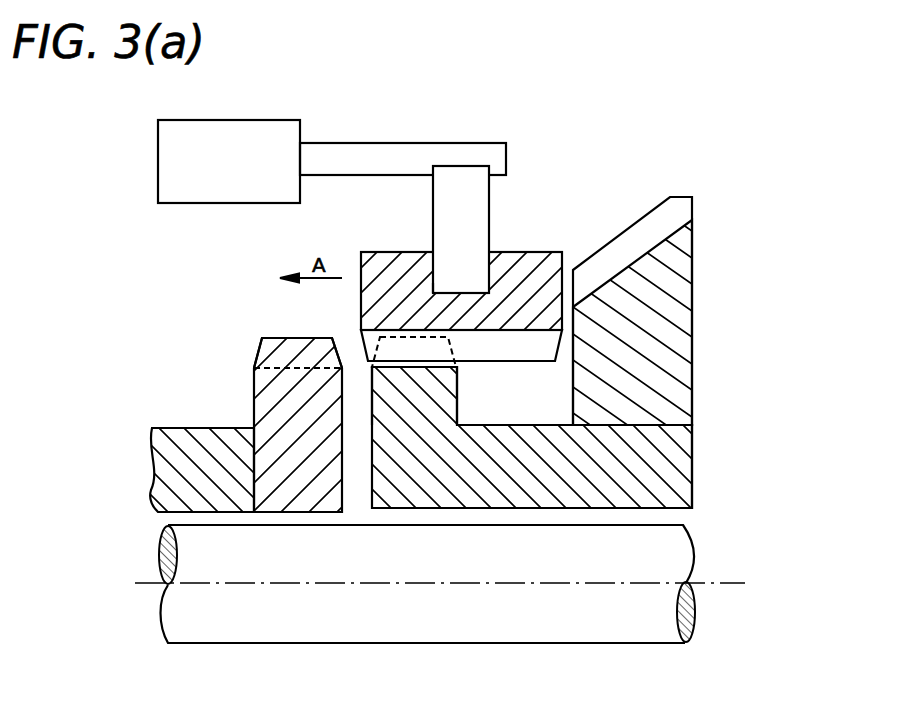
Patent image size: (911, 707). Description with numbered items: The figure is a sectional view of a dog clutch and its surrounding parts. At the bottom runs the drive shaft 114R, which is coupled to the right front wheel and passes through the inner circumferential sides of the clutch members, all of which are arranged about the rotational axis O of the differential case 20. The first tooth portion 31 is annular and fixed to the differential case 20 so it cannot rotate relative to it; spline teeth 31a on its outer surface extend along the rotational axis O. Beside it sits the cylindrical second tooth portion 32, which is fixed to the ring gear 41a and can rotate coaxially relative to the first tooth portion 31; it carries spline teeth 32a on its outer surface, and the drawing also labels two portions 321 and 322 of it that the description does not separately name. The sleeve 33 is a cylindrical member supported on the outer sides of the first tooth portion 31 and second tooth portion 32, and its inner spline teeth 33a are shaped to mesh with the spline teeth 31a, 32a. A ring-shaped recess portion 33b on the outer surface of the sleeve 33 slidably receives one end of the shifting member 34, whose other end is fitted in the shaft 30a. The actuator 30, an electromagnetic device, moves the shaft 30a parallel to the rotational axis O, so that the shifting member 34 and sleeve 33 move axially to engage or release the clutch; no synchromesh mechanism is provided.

The differential case 20 is at (190, 437).
The actuator 30 is at (225, 127).
The shaft 30a is at (363, 150).
The first tooth portion 31 is at (258, 400).
The spline teeth 31a is at (297, 348).
The second tooth portion 32 is at (520, 472).
The spline teeth 32a is at (361, 329).
The protrusion of support block 321 is at (417, 420).
The base portion of support block 322 is at (682, 468).
The sleeve 33 is at (506, 255).
The spline teeth 33a is at (497, 353).
The recess portion 33b is at (433, 283).
The shifting member 34 is at (483, 210).
The ring gear 41a is at (683, 323).
The drive shaft 114R is at (595, 635).
The rotational axis O is at (710, 580).